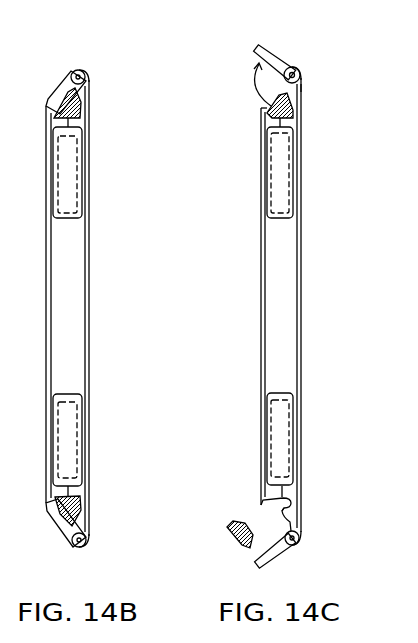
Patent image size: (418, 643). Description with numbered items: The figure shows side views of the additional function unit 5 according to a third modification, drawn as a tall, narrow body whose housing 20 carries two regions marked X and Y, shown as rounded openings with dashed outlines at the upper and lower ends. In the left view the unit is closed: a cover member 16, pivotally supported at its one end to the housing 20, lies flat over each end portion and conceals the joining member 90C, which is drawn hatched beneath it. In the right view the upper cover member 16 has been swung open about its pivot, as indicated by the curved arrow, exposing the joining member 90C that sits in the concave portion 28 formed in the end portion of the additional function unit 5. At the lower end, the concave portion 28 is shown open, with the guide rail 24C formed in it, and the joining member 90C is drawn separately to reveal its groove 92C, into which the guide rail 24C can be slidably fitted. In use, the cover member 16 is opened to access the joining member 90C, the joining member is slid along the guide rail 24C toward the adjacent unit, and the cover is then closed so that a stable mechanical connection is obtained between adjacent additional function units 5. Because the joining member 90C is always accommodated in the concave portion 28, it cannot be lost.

In FIG. 14B, the additional function unit 5 is at (88, 292).
In FIG. 14C, the additional function unit 5 is at (302, 295).
In FIG. 14B, the cover member 16 is at (60, 93).
In FIG. 14C, the cover member 16 is at (275, 55).
In FIG. 14C, the housing 20 is at (295, 105).
In FIG. 14C, the guide rail 24C is at (270, 505).
In FIG. 14C, the concave portion 28 is at (273, 515).
In FIG. 14C, the joining member 90C is at (267, 110).
In FIG. 14C, the groove 92C is at (300, 540).
In FIG. 14B, the upper slot region X is at (67, 172).
In FIG. 14C, the upper slot region X is at (280, 173).
In FIG. 14B, the lower slot region Y is at (67, 442).
In FIG. 14C, the lower slot region Y is at (283, 438).